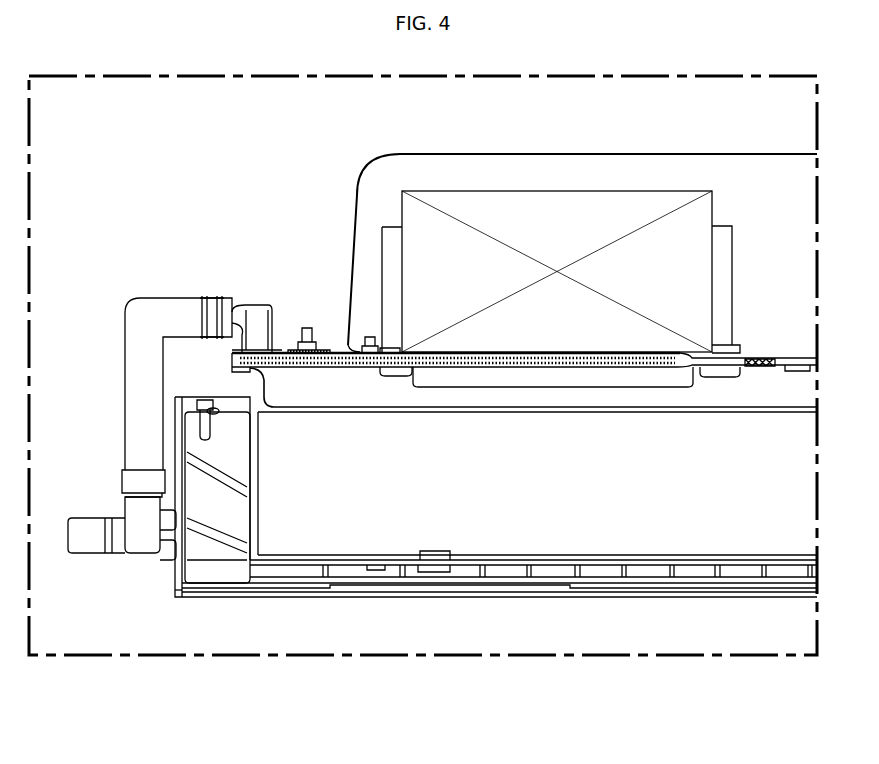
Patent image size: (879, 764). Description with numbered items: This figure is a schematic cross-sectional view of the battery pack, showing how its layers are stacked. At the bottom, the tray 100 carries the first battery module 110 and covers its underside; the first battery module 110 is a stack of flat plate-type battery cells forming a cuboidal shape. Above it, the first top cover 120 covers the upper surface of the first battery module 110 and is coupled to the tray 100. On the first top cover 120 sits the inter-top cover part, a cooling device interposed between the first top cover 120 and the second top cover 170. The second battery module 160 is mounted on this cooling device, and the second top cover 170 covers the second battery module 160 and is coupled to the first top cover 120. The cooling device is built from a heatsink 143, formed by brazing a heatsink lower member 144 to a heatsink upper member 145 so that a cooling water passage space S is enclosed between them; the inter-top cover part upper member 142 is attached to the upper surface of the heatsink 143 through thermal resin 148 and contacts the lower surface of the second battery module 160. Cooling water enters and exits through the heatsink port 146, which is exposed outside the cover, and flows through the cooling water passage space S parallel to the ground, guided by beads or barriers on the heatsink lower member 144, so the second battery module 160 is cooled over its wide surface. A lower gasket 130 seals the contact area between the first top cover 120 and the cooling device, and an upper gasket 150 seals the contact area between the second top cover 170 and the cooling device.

The tray 100 is at (330, 594).
The first battery module 110 is at (447, 510).
The first top cover 120 is at (262, 376).
The lower gasket 130 is at (758, 360).
The inter-top cover part upper member 142 is at (438, 352).
The heatsink 143 is at (536, 425).
The heatsink lower member 144 is at (525, 368).
The heatsink upper member 145 is at (624, 405).
The heatsink port 146 is at (265, 303).
The thermal resin 148 is at (651, 363).
The upper gasket 150 is at (309, 327).
The second battery module 160 is at (617, 205).
The second top cover 170 is at (710, 153).
The cooling water passage space S is at (378, 350).